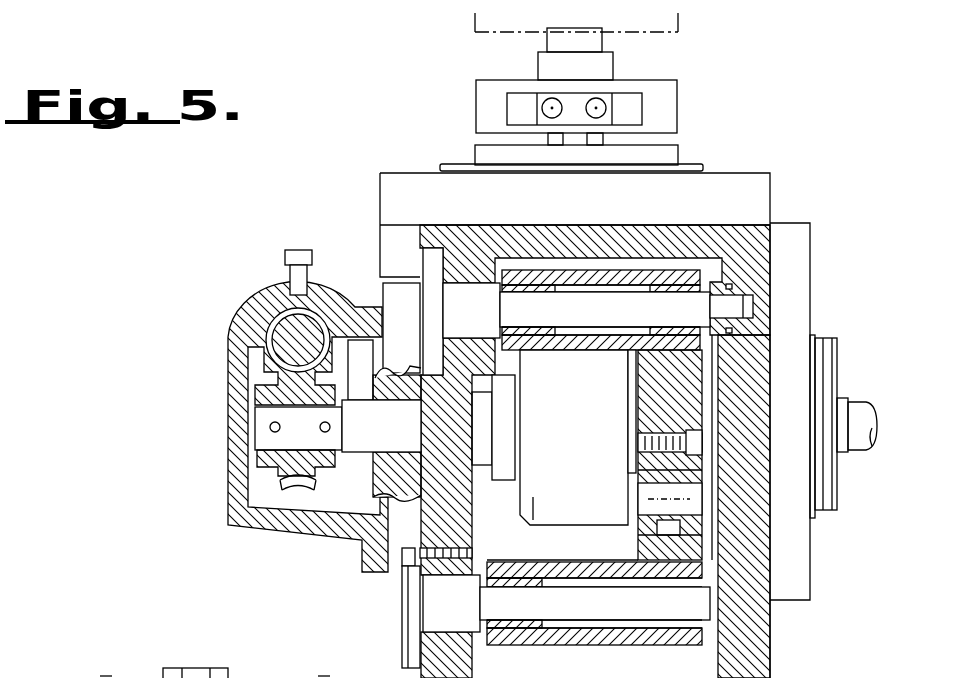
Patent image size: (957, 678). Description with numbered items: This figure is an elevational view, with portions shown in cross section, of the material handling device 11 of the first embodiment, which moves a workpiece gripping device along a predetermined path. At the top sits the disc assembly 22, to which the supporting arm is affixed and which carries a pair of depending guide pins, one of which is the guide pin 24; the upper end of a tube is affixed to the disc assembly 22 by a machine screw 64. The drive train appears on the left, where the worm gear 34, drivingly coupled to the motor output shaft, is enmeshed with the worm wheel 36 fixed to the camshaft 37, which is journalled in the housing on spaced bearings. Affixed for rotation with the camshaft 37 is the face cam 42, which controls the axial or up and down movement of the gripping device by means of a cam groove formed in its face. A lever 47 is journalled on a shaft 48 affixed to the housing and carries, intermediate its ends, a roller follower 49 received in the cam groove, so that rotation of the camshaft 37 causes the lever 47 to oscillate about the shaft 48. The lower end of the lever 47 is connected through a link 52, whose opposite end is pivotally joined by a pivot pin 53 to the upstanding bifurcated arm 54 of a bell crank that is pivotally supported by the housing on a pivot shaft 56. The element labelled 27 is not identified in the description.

The material handling device 11 is at (310, 593).
The disc assembly 22 is at (684, 103).
The guide pin 24 is at (327, 676).
The support 27 is at (101, 673).
The worm gear 34 is at (297, 332).
The worm wheel 36 is at (287, 470).
The camshaft 37 is at (368, 442).
The face cam 42 is at (702, 405).
The lever 47 is at (673, 378).
The shaft 48 is at (665, 300).
The roller follower 49 is at (705, 406).
The link 52 is at (667, 467).
The pivot pin 53 is at (657, 500).
The upstanding bifurcated arm 54 is at (643, 527).
The pivot shaft 56 is at (676, 612).
The machine screw 64 is at (228, 677).